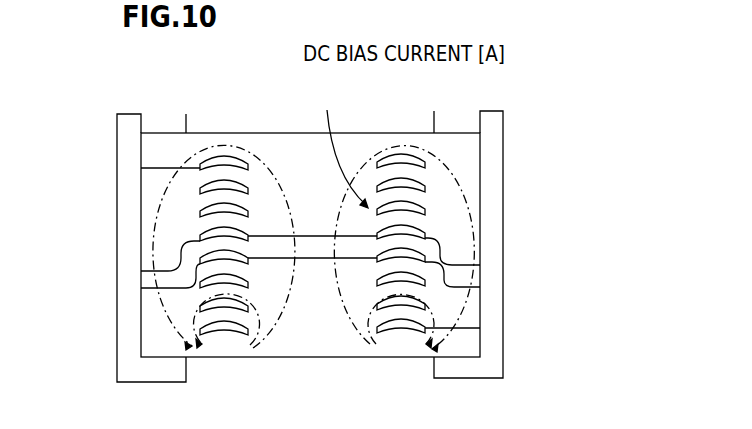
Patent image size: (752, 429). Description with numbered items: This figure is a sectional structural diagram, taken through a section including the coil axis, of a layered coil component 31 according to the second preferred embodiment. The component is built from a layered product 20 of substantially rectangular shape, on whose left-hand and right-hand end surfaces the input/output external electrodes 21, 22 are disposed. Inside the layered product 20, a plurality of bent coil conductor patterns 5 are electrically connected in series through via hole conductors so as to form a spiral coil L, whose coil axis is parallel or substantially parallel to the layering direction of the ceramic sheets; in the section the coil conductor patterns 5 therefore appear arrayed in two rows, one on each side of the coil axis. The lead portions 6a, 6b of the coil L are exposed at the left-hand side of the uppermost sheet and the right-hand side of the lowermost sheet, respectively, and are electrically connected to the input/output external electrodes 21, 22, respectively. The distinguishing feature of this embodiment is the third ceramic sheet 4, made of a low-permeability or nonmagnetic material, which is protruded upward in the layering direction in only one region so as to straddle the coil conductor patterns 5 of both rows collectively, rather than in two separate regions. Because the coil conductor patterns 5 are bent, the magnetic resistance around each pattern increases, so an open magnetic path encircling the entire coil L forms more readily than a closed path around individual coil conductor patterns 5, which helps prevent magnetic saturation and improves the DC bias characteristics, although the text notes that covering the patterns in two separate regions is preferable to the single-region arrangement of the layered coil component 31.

The layered coil component 31 is at (161, 76).
The layered product 20 is at (463, 176).
The third ceramic sheet 4 is at (315, 250).
The coil conductor pattern 5 is at (203, 210).
The lead portion 6a is at (200, 166).
The lead portion 6b is at (472, 328).
The input/output external electrode 21 is at (135, 125).
The input/output external electrode 22 is at (492, 125).
The coil L is at (344, 143).